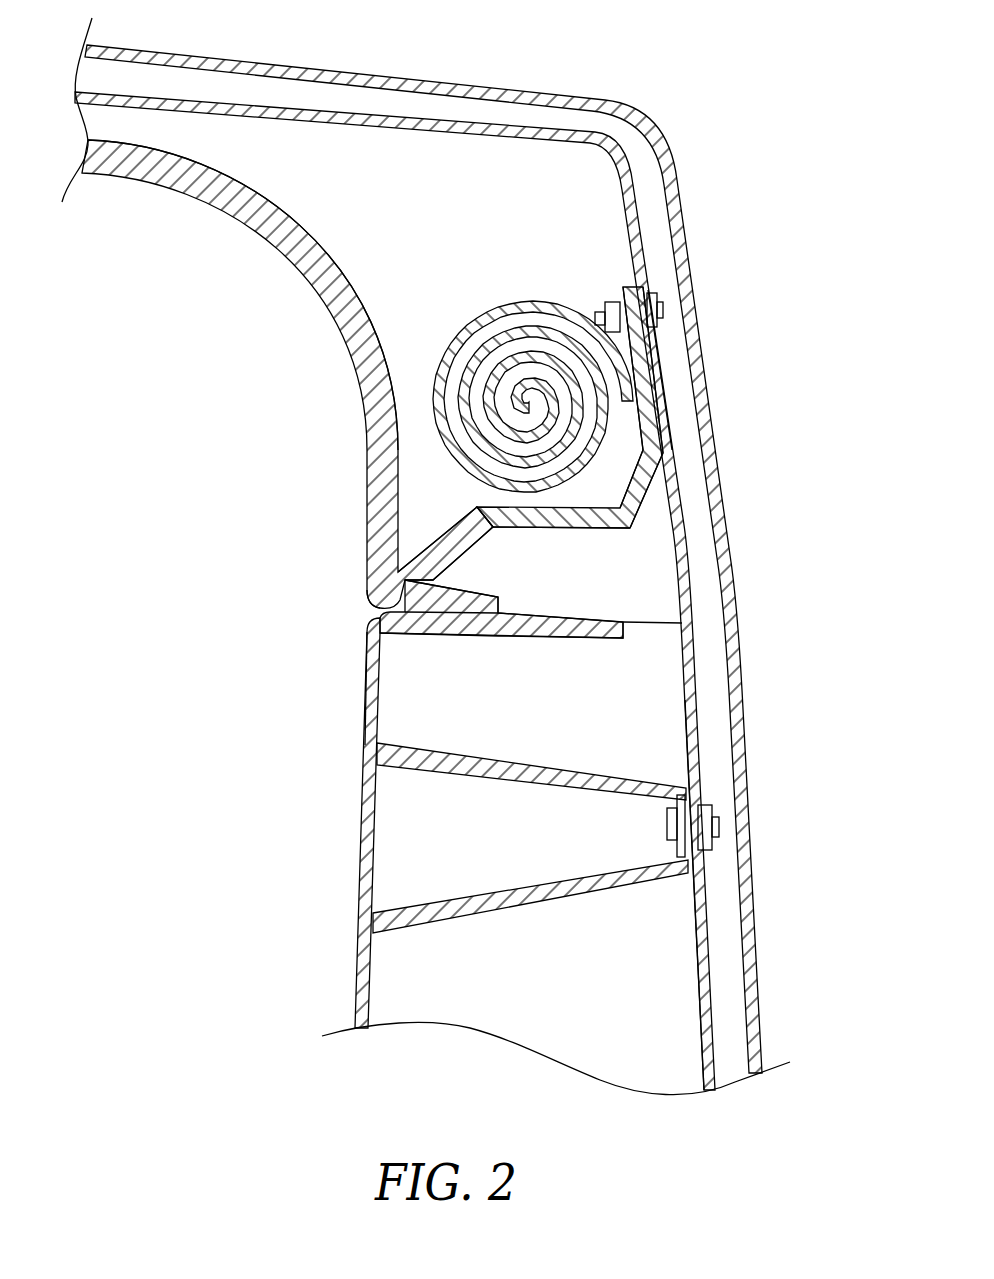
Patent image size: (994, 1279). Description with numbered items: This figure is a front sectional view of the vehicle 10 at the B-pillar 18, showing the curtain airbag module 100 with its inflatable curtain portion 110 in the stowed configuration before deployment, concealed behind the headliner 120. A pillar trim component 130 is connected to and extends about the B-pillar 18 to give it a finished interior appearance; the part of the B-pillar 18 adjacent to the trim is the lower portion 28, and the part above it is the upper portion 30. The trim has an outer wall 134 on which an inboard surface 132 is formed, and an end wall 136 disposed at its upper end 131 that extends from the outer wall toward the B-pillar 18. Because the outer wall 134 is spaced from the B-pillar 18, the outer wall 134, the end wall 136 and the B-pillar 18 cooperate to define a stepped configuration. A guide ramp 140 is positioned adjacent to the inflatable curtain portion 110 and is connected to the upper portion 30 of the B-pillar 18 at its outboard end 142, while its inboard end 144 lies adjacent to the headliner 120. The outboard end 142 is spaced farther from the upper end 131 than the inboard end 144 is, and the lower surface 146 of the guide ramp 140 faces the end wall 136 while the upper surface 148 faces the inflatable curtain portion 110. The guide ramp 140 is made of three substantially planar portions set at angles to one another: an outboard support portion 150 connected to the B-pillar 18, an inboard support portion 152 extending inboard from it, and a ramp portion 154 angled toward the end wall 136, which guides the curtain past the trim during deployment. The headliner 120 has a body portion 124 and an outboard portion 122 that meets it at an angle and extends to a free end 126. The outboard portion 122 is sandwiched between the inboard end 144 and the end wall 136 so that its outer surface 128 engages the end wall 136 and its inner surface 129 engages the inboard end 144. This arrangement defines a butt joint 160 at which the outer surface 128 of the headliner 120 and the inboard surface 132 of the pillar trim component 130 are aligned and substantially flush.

The vehicle 10 is at (760, 64).
The B-pillar 18 is at (742, 609).
The lower portion of the B-pillar 28 is at (685, 727).
The upper portion of the B-pillar 30 is at (678, 563).
The curtain airbag module 100 is at (516, 255).
The inflatable curtain portion 110 is at (558, 300).
The headliner 120 is at (286, 270).
The outboard portion of the headliner 122 is at (465, 609).
The body portion of the headliner 124 is at (345, 348).
The free end of the headliner 126 is at (499, 605).
The outer surface of the headliner 128 is at (420, 632).
The inner surface of the headliner 129 is at (487, 588).
The pillar trim component 130 is at (308, 781).
The upper end of the pillar trim component 131 is at (367, 687).
The inboard surface of the pillar trim component 132 is at (360, 827).
The outer wall of the pillar trim component 134 is at (363, 862).
The end wall of the pillar trim component 136 is at (557, 626).
The guide ramp 140 is at (436, 539).
The outboard end of the guide ramp 142 is at (648, 402).
The inboard end of the guide ramp 144 is at (402, 582).
The lower surface of the guide ramp 146 is at (500, 532).
The upper surface of the guide ramp 148 is at (462, 510).
The outboard support portion 150 is at (652, 450).
The inboard support portion 152 is at (593, 530).
The ramp portion 154 is at (410, 572).
The butt joint 160 is at (348, 612).